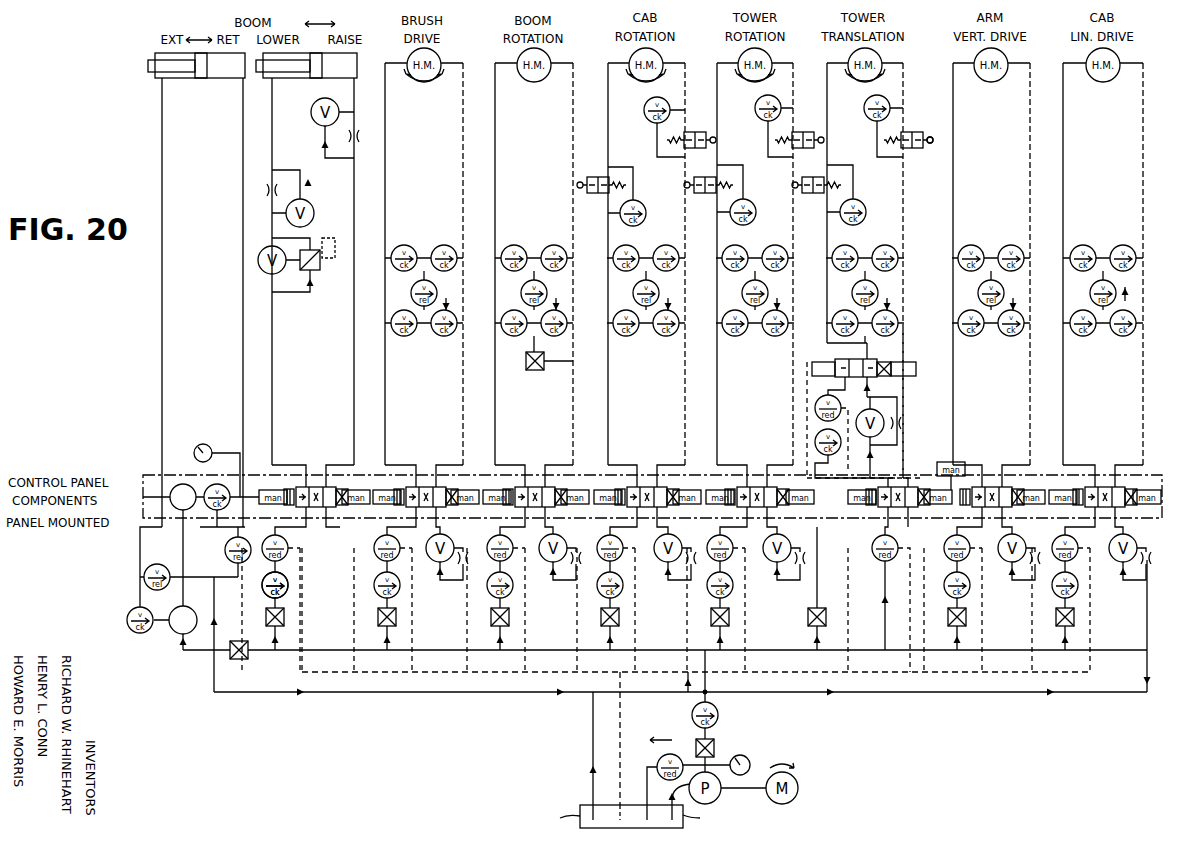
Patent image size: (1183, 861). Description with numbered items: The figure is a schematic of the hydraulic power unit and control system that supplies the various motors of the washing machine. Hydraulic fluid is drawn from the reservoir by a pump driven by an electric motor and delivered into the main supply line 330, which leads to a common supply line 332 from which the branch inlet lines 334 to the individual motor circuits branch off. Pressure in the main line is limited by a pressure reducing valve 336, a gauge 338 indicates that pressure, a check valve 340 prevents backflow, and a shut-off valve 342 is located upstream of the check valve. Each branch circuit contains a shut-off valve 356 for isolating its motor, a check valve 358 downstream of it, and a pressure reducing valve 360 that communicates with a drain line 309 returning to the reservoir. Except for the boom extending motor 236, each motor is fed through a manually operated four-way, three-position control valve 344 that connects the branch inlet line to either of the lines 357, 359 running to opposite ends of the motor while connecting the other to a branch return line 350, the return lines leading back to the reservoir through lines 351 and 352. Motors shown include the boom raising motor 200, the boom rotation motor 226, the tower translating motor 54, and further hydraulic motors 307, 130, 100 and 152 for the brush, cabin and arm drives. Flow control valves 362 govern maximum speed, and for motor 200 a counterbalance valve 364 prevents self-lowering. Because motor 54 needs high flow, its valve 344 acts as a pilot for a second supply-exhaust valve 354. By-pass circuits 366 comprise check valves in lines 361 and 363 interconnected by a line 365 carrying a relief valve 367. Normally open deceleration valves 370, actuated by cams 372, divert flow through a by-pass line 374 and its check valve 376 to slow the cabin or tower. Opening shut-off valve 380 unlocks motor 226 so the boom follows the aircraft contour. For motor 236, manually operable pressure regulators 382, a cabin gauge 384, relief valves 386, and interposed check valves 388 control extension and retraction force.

The motor for extending and retracting boom 236 is at (218, 80).
The motor for raising and lowering boom 200 is at (317, 80).
The brush drive hydraulic motor 307 is at (429, 83).
The boom motor 226 is at (541, 84).
The cab rotation hydraulic motor 130 is at (643, 80).
The motor for translating tower 54 is at (861, 84).
The arm vertical drive hydraulic motor 100 is at (996, 84).
The cab linear drive hydraulic motor 152 is at (1109, 84).
The deceleration valve 370 is at (700, 130).
The cam 372 is at (932, 143).
The by-pass line 374 is at (745, 184).
The check valve 376 is at (753, 212).
The flow control valve 362 is at (354, 158).
The counterbalance valve 364 is at (314, 246).
The by-pass circuit 366 is at (430, 244).
The by-pass circuit line 361 is at (1099, 244).
The by-pass circuit line 363 is at (1112, 335).
The interconnecting line 365 is at (1124, 297).
The relief valve 367 is at (1090, 289).
The motor line 357 is at (162, 315).
The motor line 359 is at (242, 324).
The shut-off valve 380 is at (548, 355).
The second supply-exhaust valve 354 is at (897, 351).
The manually operated control valve 344 is at (306, 485).
The gauge 384 is at (200, 448).
The pressure regulator 382 is at (172, 482).
The check valve 388 is at (230, 492).
The relief valve 386 is at (228, 544).
The pressure reducing valve 360 is at (285, 544).
The check valve 358 is at (288, 585).
The shut-off valve 356 is at (294, 630).
The branch return line 350 is at (262, 590).
The branch inlet line 334 is at (183, 654).
The return line 351 is at (412, 692).
The common supply line 332 is at (884, 672).
The drain line 309 is at (466, 672).
The return line 352 is at (592, 740).
The main supply line 330 is at (645, 766).
The shut-off valve 342 is at (696, 741).
The check valve 340 is at (725, 714).
The gauge 338 is at (750, 754).
The pressure reducing valve 336 is at (662, 829).